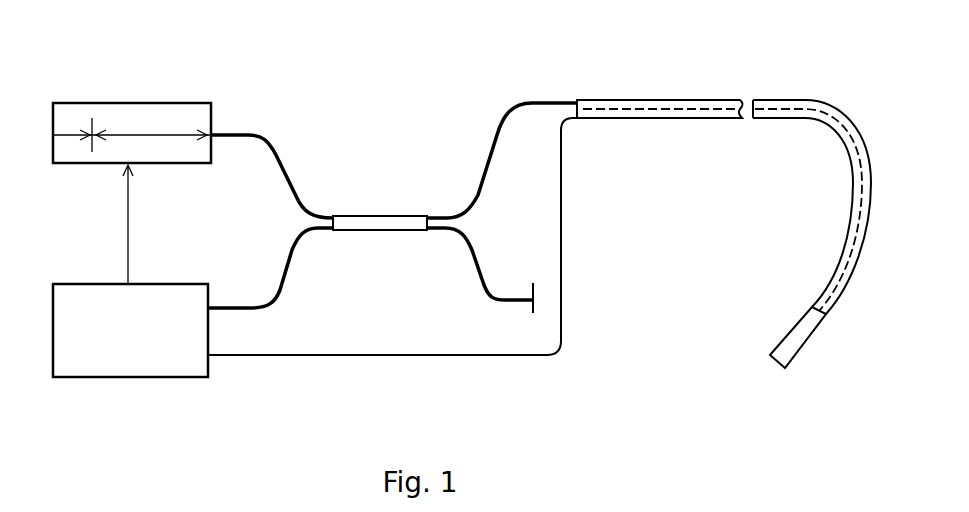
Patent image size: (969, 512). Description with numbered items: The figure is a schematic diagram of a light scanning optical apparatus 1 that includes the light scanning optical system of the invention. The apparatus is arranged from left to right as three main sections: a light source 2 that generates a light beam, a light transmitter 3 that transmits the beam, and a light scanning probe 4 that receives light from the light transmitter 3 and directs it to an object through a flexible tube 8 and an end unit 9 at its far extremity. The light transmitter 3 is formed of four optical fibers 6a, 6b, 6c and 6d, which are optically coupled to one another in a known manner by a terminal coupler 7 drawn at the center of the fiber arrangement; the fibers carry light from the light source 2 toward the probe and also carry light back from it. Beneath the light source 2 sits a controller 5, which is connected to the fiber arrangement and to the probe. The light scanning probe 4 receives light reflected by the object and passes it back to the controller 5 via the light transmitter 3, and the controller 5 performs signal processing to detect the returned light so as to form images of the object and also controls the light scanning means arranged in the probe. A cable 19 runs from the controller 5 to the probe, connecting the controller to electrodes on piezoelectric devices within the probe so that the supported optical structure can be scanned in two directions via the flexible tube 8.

The light scanning optical apparatus 1 is at (470, 227).
The light source 2 is at (208, 66).
The light transmitter 3 is at (392, 162).
The light scanning probe 4 is at (732, 190).
The controller 5 is at (208, 387).
The optical fiber 6a is at (280, 160).
The optical fiber 6b is at (486, 164).
The optical fiber 6c is at (298, 278).
The optical fiber 6d is at (482, 277).
The terminal coupler 7 is at (378, 216).
The flexible tube 8 is at (702, 119).
The end unit 9 is at (787, 333).
The cable 19 is at (562, 290).